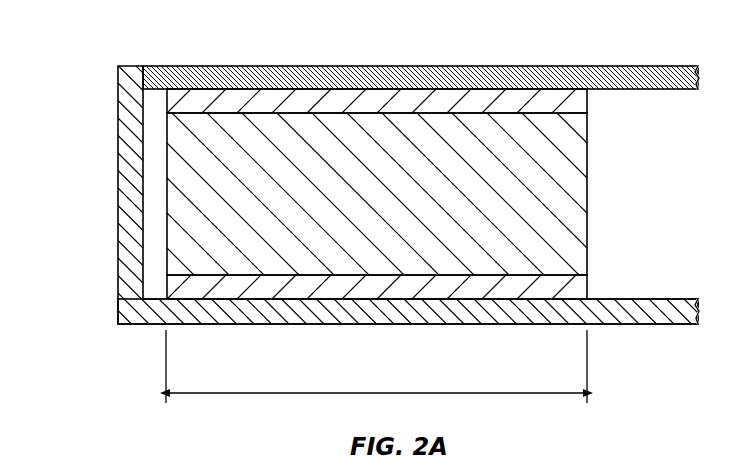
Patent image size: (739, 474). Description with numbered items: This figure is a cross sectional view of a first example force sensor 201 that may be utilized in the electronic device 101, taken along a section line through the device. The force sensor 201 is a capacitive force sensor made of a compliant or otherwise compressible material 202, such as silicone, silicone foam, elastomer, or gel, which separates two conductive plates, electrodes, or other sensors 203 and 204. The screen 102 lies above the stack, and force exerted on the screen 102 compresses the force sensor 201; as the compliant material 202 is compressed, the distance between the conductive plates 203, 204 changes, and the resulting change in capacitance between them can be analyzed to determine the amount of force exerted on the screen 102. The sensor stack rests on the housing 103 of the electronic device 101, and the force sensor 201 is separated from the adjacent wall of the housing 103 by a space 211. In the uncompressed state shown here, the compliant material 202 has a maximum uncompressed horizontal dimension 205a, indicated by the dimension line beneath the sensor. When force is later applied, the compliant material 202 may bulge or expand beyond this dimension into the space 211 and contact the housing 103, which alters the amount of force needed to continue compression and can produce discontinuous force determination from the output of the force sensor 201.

The electronic device 101 is at (84, 158).
The screen 102 is at (657, 66).
The housing 103 is at (650, 324).
The force sensor 201 is at (421, 194).
The compliant material 202 is at (587, 197).
The conductive plate 203 is at (587, 100).
The conductive plate 204 is at (587, 290).
The space 211 is at (150, 103).
The maximum uncompressed horizontal dimension 205a is at (378, 392).